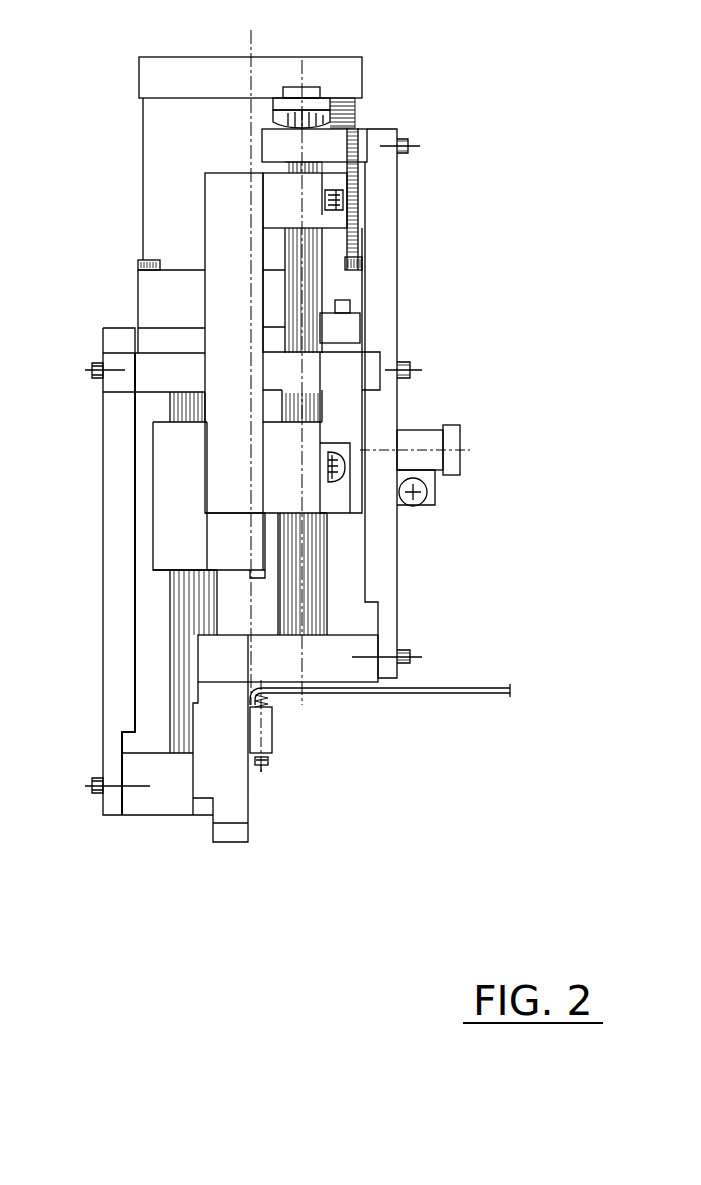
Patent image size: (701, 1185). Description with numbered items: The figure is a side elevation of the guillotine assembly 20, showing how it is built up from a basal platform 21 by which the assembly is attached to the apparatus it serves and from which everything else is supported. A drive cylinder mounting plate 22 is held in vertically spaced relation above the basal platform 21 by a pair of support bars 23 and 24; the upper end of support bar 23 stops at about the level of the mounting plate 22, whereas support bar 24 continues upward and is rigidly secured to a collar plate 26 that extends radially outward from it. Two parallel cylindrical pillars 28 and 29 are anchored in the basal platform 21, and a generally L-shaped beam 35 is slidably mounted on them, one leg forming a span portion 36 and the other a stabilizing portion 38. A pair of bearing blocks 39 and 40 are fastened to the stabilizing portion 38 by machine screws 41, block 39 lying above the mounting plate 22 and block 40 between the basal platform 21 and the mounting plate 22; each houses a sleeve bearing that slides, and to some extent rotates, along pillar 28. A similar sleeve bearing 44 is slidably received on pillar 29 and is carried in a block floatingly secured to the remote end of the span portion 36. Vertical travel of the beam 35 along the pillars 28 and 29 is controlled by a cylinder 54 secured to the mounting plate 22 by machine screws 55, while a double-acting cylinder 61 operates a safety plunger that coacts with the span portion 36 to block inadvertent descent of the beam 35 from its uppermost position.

The guillotine assembly 20 is at (483, 68).
The basal platform 21 is at (232, 778).
The drive cylinder mounting plate 22 is at (135, 373).
The support bar 23 is at (388, 285).
The support bar 24 is at (113, 705).
The collar plate 26 is at (330, 141).
The pillar 28 is at (318, 586).
The pillar 29 is at (188, 628).
The beam 35 is at (224, 489).
The span portion 36 is at (175, 553).
The stabilizing portion 38 is at (220, 293).
The bearing block 39 is at (340, 222).
The bearing block 40 is at (340, 498).
The machine screw 41 is at (340, 202).
The sleeve bearing 44 is at (163, 460).
The cylinder 54 is at (156, 129).
The machine screw 55 is at (140, 262).
The double-acting cylinder 61 is at (428, 438).